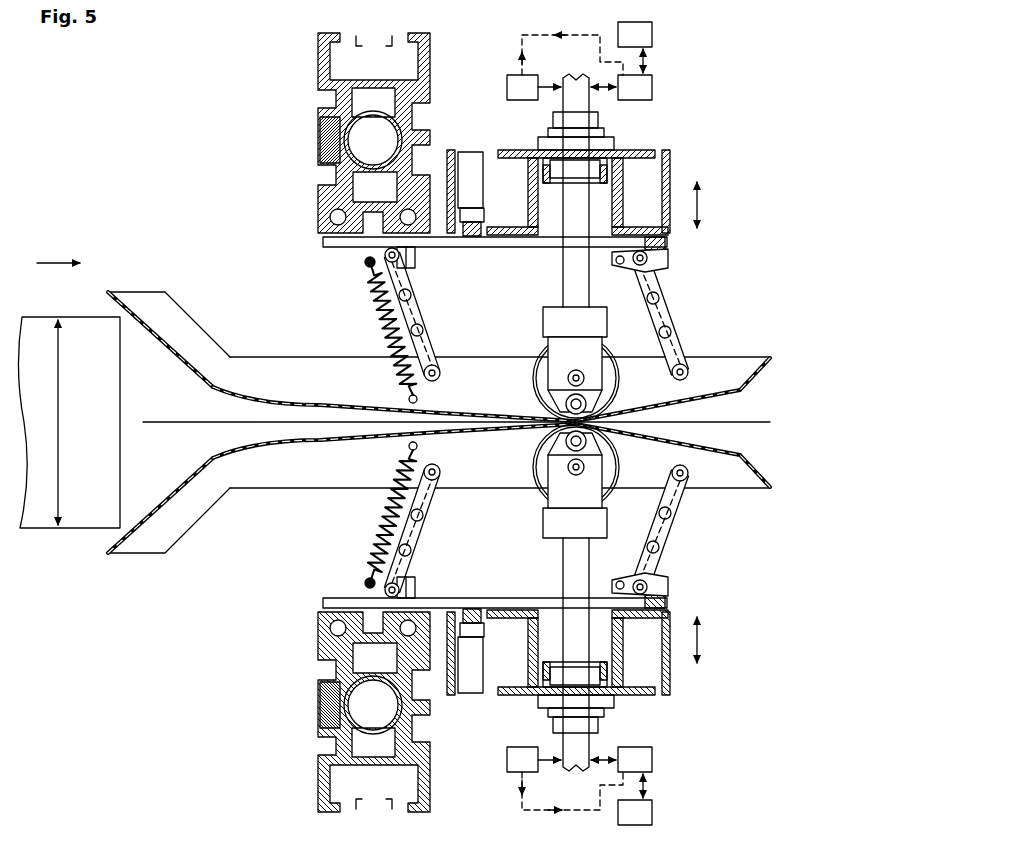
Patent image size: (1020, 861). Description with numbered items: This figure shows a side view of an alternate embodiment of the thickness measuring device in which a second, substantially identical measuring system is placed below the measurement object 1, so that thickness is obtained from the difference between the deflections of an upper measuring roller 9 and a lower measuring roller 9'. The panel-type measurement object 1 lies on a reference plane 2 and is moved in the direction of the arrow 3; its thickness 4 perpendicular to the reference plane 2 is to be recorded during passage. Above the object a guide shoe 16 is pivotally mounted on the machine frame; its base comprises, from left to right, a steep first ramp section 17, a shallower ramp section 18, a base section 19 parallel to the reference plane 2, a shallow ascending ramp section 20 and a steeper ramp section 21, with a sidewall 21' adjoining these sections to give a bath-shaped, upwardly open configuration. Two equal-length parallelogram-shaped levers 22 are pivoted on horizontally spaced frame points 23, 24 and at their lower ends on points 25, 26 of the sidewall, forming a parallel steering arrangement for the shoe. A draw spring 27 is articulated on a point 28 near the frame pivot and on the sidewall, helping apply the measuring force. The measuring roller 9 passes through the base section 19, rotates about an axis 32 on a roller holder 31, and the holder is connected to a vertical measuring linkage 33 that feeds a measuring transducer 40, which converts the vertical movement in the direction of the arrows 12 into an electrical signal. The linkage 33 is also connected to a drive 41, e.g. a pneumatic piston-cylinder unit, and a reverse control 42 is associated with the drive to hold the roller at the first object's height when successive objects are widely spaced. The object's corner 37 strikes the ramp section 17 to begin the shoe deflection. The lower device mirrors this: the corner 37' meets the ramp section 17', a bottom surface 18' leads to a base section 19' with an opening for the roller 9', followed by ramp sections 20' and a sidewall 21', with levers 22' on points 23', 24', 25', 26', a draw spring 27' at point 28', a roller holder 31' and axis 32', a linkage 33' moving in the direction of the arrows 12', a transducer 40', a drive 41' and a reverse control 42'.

The measurement object 1 is at (100, 317).
The reference plane 2 is at (160, 421).
The arrow 3 is at (40, 262).
The thickness 4 is at (59, 402).
The measuring roller 9 is at (590, 358).
The measuring roller 9' is at (590, 493).
The arrows 12 is at (723, 205).
The arrows 12' is at (725, 640).
The guide shoe 16 is at (298, 318).
The first ramp section 17 is at (169, 316).
The first ramp section 17' is at (169, 525).
The ramp section 18 is at (326, 366).
The bottom surface 18' is at (326, 477).
The base section 19 is at (508, 375).
The base section 19' is at (508, 466).
The ramp section 20 is at (673, 377).
The ramp section 20' is at (673, 472).
The ramp section 21 is at (500, 347).
The sidewall 21' is at (500, 498).
The parallelogram-shaped levers 22 is at (548, 313).
The parallelogram-shaped levers 22' is at (543, 530).
The point 23 is at (419, 258).
The point 23' is at (419, 586).
The point 24 is at (659, 254).
The point 24' is at (657, 590).
The point 25 is at (448, 345).
The point 25' is at (448, 500).
The point 26 is at (696, 344).
The point 26' is at (695, 505).
The draw spring 27 is at (372, 332).
The draw spring 27' is at (371, 512).
The point 28 is at (342, 260).
The point 28' is at (342, 585).
The roller holder 31 is at (557, 312).
The roller holder 31' is at (556, 532).
The axis 32 is at (564, 375).
The axis 32' is at (562, 467).
The measuring linkage 33 is at (569, 190).
The measuring linkage 33' is at (567, 654).
The corner 37 is at (160, 311).
The corner 37' is at (160, 533).
The measuring transducer 40 is at (540, 67).
The measuring transducer 40' is at (539, 778).
The drive 41 is at (647, 87).
The drive 41' is at (652, 759).
The reverse control 42 is at (660, 47).
The reverse control 42' is at (665, 799).